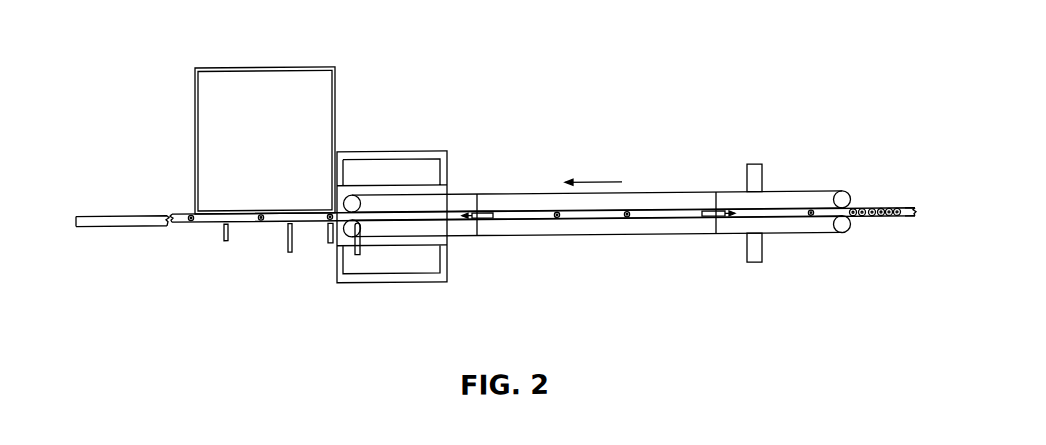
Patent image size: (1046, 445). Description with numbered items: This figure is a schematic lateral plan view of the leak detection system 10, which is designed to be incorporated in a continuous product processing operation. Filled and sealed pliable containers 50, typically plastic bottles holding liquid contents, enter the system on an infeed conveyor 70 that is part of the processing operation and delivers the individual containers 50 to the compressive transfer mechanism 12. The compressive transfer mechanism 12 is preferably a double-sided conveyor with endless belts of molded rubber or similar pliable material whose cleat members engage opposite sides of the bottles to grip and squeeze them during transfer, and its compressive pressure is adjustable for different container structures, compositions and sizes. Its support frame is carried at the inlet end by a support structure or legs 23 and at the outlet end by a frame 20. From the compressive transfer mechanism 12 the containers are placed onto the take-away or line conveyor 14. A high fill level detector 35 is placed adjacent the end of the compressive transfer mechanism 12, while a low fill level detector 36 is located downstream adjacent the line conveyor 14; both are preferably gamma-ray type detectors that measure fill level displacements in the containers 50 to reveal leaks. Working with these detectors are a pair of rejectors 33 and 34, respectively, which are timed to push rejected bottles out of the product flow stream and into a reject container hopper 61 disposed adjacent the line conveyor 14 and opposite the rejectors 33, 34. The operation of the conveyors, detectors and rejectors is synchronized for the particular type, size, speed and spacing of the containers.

The leak detection system 10 is at (141, 345).
The compressive transfer mechanism 12 is at (594, 282).
The take-away conveyor 14 is at (138, 211).
The frame 20 is at (388, 280).
The support structure or legs 23 is at (753, 267).
The rejector 33 is at (330, 240).
The rejector 34 is at (226, 241).
The high fill level detector 35 is at (357, 253).
The low fill level detector 36 is at (290, 251).
The pliable containers 50 is at (708, 212).
The reject container hopper 61 is at (334, 64).
The infeed conveyor 70 is at (910, 208).